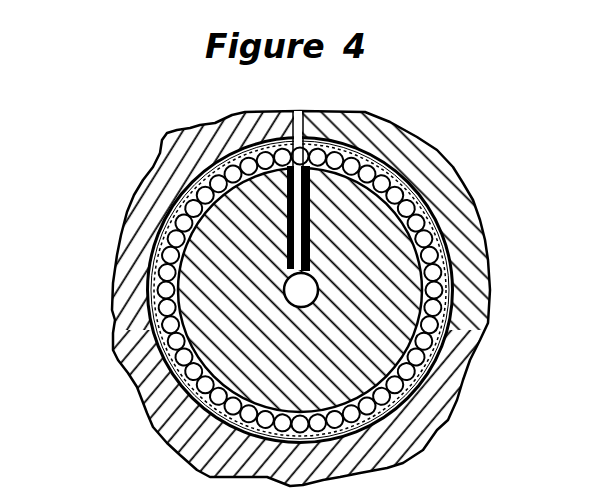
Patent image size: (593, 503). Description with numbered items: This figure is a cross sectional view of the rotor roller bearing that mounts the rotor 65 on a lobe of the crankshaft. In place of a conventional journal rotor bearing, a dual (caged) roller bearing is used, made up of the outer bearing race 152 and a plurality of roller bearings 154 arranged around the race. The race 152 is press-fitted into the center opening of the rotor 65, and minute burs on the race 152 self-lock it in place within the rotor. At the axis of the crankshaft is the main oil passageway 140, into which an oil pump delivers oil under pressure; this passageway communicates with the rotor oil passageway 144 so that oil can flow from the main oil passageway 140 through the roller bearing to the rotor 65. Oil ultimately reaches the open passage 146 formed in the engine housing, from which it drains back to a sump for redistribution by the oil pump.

The rotor 65 is at (462, 194).
The main oil passageway 140 is at (297, 301).
The rotor oil passageway 144 is at (287, 212).
The open passage 146 is at (296, 112).
The outer bearing race 152 is at (440, 258).
The roller bearing 154 is at (432, 331).